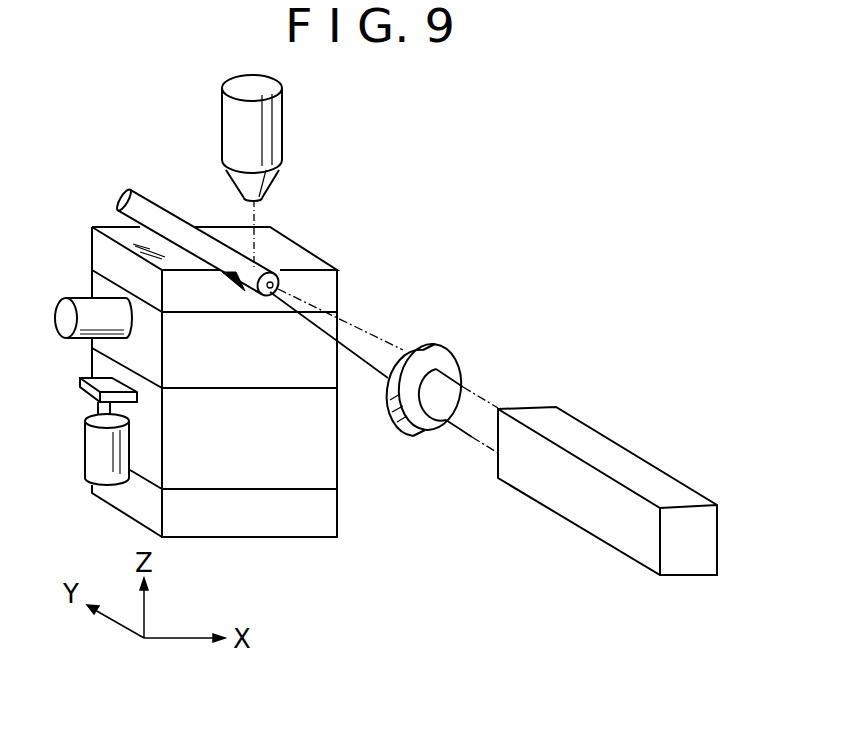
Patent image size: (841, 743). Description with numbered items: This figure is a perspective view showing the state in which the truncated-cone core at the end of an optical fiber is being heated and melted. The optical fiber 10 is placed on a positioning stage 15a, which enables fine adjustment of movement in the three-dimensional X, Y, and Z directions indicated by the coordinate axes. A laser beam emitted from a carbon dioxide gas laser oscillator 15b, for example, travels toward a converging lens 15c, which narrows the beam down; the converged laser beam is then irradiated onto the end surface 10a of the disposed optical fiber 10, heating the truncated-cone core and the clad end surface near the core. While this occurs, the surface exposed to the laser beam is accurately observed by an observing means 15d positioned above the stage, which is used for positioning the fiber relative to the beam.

The optical fiber 10 is at (159, 212).
The end surface 10a is at (276, 279).
The positioning stage 15a is at (287, 527).
The carbon dioxide gas laser oscillator 15b is at (593, 448).
The converging lens 15c is at (425, 350).
The observing means 15d is at (268, 125).